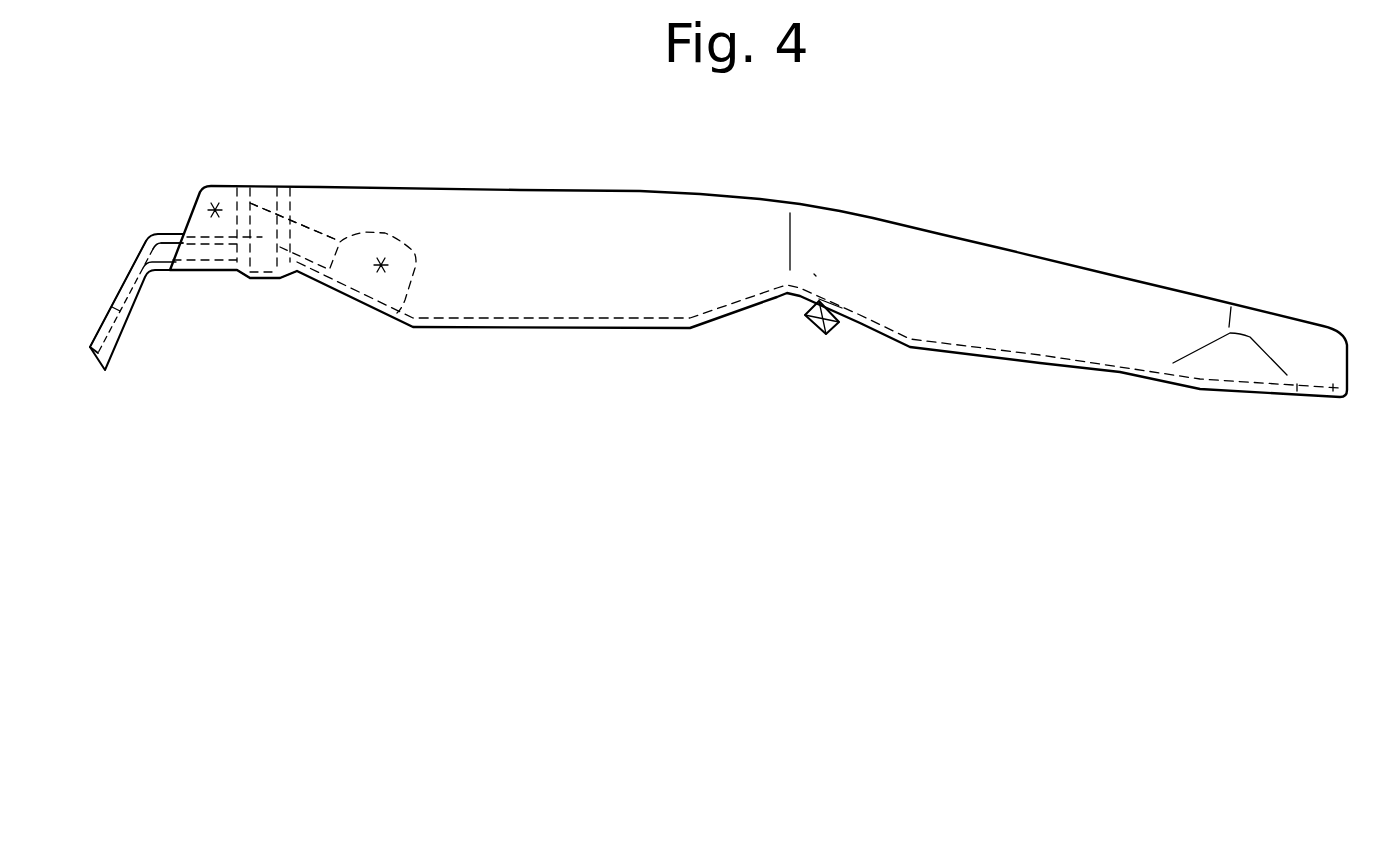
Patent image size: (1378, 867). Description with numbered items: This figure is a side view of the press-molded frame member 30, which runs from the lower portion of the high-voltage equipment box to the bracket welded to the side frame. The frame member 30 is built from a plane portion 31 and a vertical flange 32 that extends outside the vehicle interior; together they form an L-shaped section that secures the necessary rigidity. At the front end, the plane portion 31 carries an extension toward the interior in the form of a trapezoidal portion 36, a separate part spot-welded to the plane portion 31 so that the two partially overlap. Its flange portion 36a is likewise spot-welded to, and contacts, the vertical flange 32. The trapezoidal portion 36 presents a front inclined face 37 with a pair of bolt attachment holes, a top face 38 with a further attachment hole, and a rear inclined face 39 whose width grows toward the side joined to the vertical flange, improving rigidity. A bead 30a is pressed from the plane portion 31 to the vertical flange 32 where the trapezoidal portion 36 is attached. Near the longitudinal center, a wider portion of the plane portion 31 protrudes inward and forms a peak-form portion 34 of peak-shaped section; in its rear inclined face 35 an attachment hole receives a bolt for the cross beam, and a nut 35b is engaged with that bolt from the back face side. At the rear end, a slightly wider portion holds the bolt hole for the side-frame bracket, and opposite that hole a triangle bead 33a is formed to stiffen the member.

The frame member 30 is at (977, 236).
The bead 30a is at (267, 280).
The plane portion 31 is at (1067, 357).
The vertical flange 32 is at (1152, 317).
The triangle bead 33a is at (1252, 337).
The peak-form portion 34 is at (787, 283).
The rib 35 is at (853, 310).
The nut 35b is at (811, 336).
The trapezoidal portion 36 is at (152, 233).
The flange portion 36a is at (400, 233).
The front inclined face 37 is at (130, 273).
The top face 38 is at (173, 233).
The rear inclined face 39 is at (337, 240).